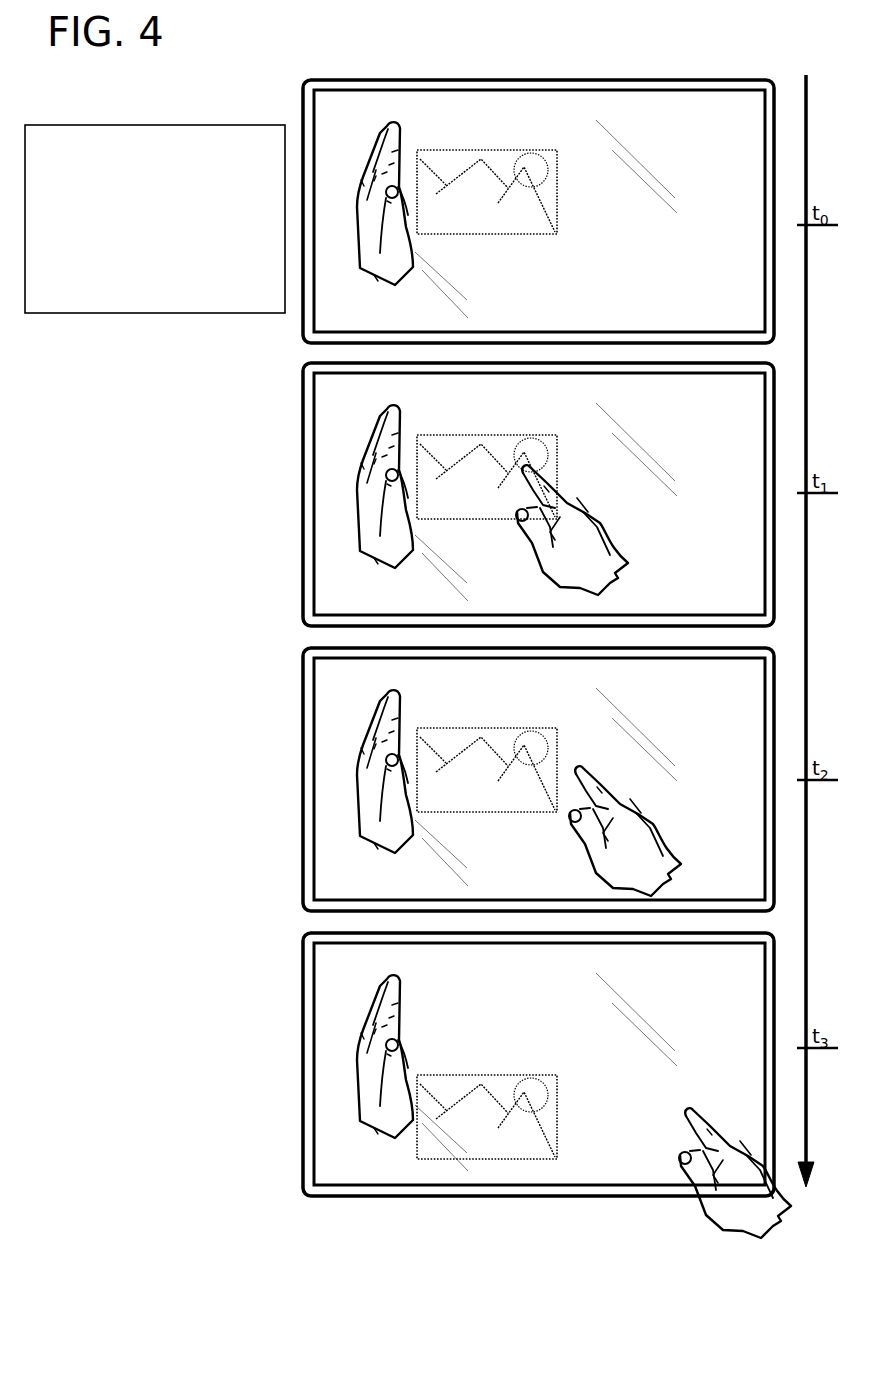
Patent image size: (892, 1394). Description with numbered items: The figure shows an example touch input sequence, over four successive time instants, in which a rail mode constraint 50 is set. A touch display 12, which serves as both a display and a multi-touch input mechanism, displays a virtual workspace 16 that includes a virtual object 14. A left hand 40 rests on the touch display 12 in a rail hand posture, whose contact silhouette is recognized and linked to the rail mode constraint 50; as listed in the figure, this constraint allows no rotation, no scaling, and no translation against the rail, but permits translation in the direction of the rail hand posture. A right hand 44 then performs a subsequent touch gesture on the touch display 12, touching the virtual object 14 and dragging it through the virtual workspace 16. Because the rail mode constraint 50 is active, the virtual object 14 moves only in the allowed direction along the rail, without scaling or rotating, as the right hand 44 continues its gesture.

The touch display 12 is at (750, 320).
The virtual object 14 is at (509, 144).
The virtual workspace 16 is at (672, 153).
The left hand 40 is at (364, 287).
The right hand 44 is at (584, 501).
The rail mode constraint 50 is at (144, 122).